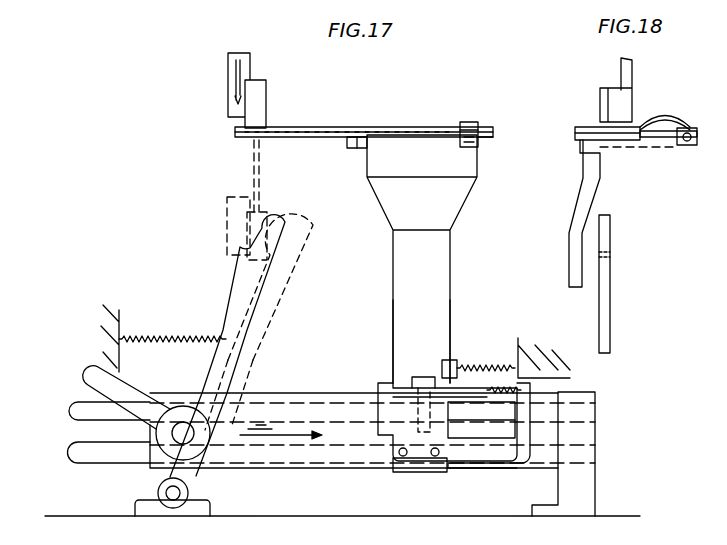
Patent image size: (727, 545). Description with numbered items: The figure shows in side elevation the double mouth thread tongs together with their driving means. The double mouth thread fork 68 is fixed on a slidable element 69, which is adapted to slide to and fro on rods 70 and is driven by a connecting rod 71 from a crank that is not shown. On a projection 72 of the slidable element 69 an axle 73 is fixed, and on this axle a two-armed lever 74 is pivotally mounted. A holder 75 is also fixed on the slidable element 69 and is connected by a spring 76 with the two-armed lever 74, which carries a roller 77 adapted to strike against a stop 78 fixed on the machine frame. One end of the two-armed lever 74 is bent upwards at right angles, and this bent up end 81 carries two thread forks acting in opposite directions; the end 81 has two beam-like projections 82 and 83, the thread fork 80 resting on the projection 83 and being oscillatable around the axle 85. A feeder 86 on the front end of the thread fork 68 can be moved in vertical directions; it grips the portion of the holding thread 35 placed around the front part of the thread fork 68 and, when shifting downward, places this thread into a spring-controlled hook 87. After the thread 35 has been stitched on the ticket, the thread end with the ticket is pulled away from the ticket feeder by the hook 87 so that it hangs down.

In FIG. 17, the holding thread 35 is at (280, 137).
In FIG. 17, the thread fork 68 is at (470, 163).
In FIG. 17, the slidable element 69 is at (305, 402).
In FIG. 17, the rods 70 is at (107, 455).
In FIG. 17, the connecting rod 71 is at (132, 394).
In FIG. 17, the projection 72 is at (484, 418).
In FIG. 17, the axle 73 is at (437, 432).
In FIG. 17, the two-armed lever 74 is at (398, 392).
In FIG. 17, the holder 75 is at (355, 148).
In FIG. 17, the spring 76 is at (508, 395).
In FIG. 17, the roller 77 is at (452, 360).
In FIG. 17, the stop 78 is at (490, 368).
In FIG. 17, the thread fork 80 is at (471, 130).
In FIG. 18, the thread fork 80 is at (663, 123).
In FIG. 17, the bent up end 81 is at (450, 206).
In FIG. 18, the bent up end 81 is at (582, 209).
In FIG. 17, the beam-like projection 82 is at (360, 142).
In FIG. 17, the beam-like projection 83 is at (466, 147).
In FIG. 17, the axle 85 is at (460, 138).
In FIG. 18, the axle 85 is at (689, 146).
In FIG. 17, the feeder 86 is at (240, 228).
In FIG. 18, the feeder 86 is at (622, 112).
In FIG. 17, the hook 87 is at (246, 309).
In FIG. 18, the hook 87 is at (609, 288).